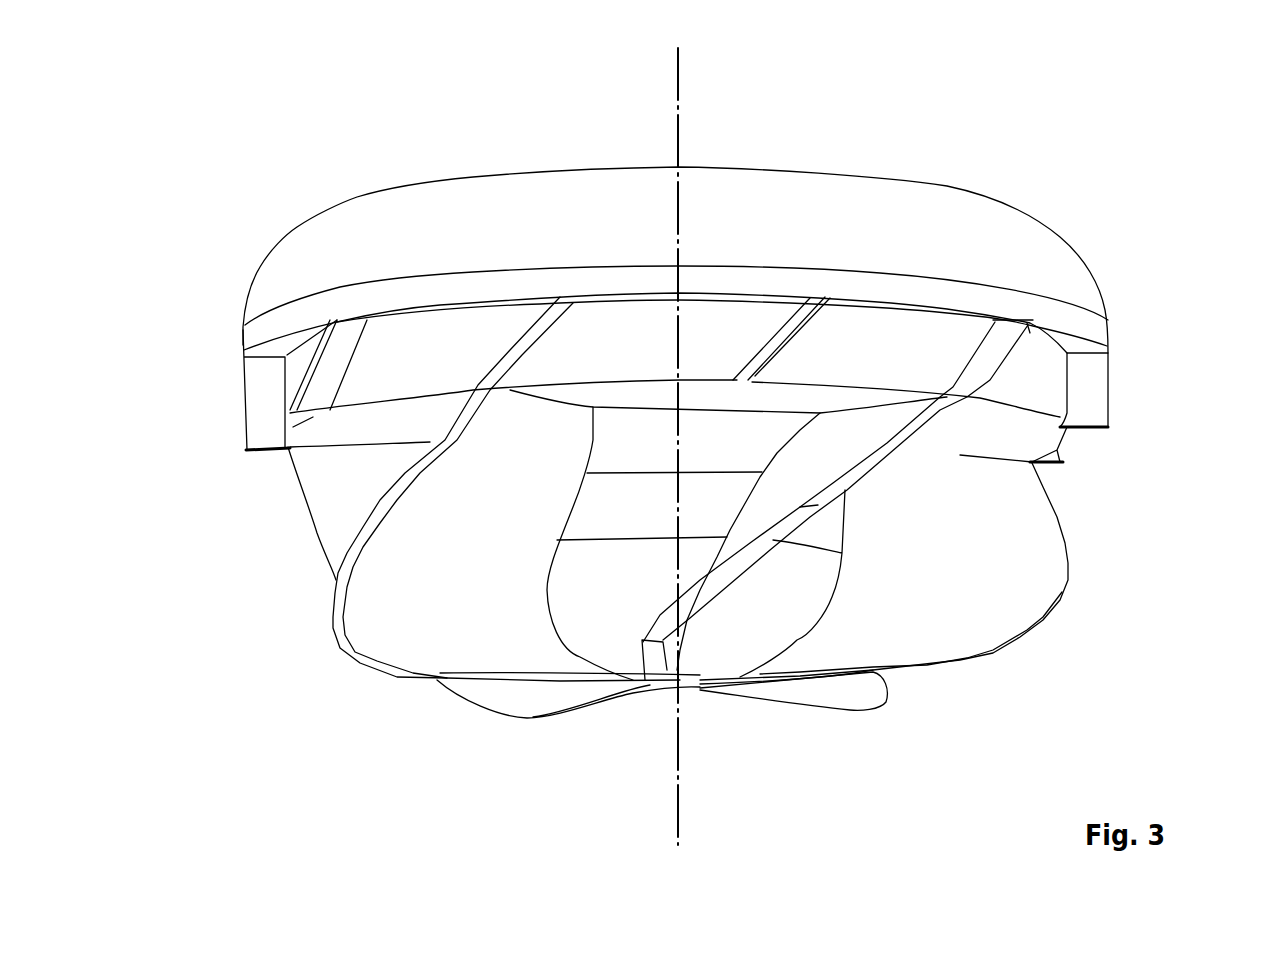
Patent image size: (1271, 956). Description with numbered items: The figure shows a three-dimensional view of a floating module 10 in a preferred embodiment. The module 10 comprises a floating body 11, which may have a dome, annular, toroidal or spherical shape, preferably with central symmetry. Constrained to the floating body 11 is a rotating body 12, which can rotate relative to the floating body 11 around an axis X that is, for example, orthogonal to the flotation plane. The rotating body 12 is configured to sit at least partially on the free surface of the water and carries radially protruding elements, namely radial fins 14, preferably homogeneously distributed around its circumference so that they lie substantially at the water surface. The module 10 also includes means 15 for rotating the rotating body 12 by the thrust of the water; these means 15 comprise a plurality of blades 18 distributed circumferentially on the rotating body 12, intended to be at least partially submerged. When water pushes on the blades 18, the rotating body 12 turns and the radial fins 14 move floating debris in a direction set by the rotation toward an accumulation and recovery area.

The module 10 is at (1131, 147).
The floating body 11 is at (848, 200).
The rotating body 12 is at (635, 567).
The radial fins 14 is at (1094, 386).
The means 15 is at (286, 537).
The blades 18 is at (1030, 563).